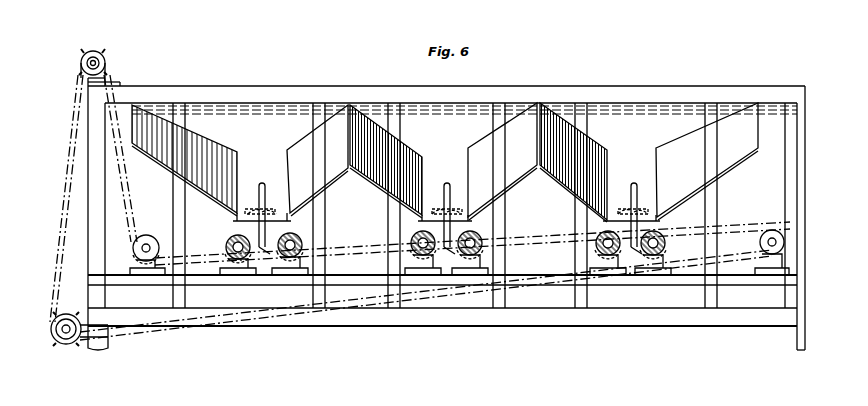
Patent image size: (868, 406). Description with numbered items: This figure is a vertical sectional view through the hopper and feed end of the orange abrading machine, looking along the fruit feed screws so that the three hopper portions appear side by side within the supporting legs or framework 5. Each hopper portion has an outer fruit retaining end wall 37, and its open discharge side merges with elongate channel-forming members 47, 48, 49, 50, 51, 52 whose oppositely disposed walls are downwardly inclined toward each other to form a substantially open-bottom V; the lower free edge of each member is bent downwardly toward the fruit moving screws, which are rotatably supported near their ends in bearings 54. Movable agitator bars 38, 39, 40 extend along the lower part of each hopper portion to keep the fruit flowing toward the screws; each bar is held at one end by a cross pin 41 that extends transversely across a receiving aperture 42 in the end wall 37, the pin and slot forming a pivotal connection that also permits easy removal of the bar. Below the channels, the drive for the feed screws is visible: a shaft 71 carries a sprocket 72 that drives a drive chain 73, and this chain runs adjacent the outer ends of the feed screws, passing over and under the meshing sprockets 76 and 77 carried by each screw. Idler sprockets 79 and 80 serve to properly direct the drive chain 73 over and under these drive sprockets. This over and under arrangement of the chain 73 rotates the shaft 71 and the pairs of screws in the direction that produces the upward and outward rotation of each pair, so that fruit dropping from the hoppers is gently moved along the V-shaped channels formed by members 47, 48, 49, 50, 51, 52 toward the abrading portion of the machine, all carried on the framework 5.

The framework 5 is at (804, 342).
The fruit retaining end wall 37 is at (400, 105).
The agitator bar 38 is at (258, 210).
The agitator bar 39 is at (458, 210).
The agitator bar 40 is at (640, 209).
The cross pin 41 is at (266, 208).
The receiving aperture 42 is at (263, 183).
The channel-forming member 47 is at (184, 163).
The channel-forming member 48 is at (317, 163).
The channel-forming member 49 is at (386, 163).
The channel-forming member 50 is at (502, 162).
The channel-forming member 51 is at (573, 162).
The channel-forming member 52 is at (707, 162).
The bearing 54 is at (228, 264).
The shaft 71 is at (106, 64).
The sprocket 72 is at (102, 52).
The drive chain 73 is at (66, 148).
The sprocket 76 is at (146, 236).
The sprocket 77 is at (302, 240).
The idler sprocket 79 is at (774, 231).
The idler sprocket 80 is at (50, 332).